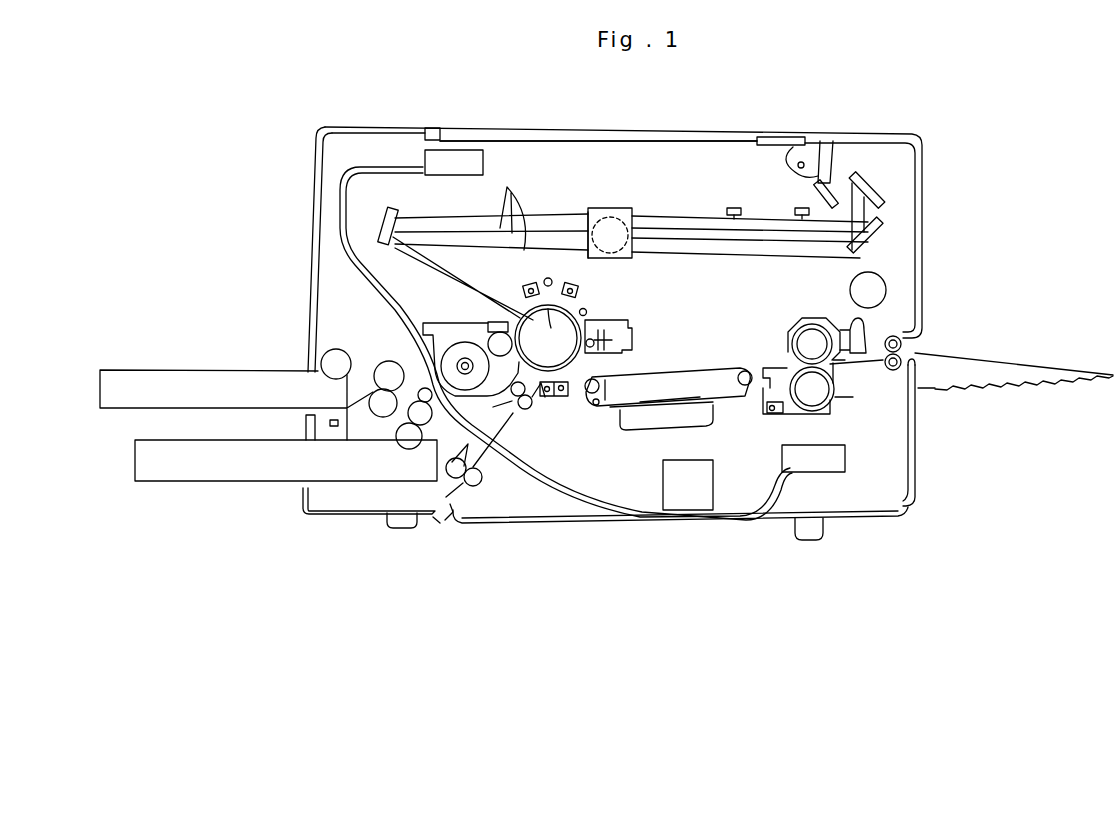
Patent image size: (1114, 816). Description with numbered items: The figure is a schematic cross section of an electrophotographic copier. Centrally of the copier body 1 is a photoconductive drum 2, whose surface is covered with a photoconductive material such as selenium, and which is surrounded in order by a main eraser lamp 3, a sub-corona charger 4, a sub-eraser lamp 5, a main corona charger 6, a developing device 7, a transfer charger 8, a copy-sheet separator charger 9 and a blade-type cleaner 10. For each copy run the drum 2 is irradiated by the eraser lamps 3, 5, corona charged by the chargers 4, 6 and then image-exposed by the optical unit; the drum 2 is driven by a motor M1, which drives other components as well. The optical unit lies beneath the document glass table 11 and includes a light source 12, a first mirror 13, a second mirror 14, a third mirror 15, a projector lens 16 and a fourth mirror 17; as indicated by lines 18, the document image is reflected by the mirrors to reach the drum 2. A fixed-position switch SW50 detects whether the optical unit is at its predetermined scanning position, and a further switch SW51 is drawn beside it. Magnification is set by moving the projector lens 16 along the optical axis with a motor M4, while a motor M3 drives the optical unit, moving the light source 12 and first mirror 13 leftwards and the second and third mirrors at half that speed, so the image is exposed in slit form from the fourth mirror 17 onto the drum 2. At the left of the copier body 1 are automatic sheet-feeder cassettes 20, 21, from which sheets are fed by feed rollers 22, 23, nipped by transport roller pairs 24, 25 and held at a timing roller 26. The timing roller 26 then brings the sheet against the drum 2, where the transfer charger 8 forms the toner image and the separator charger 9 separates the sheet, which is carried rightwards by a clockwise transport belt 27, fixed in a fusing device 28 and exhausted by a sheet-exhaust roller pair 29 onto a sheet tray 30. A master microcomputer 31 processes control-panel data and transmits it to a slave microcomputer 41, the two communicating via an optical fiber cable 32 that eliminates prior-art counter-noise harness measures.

The copier body 1 is at (926, 221).
The photoconductive drum 2 is at (548, 338).
The main eraser lamp 3 is at (590, 311).
The sub-corona charger 4 is at (574, 285).
The sub-eraser lamp 5 is at (548, 282).
The main corona charger 6 is at (524, 284).
The developing device 7 is at (440, 324).
The transfer charger 8 is at (550, 397).
The copy-sheet separator charger 9 is at (565, 397).
The blade-type cleaner 10 is at (632, 336).
The document glass table 11 is at (696, 143).
The light source 12 is at (787, 163).
The first mirror 13 is at (815, 193).
The second mirror 14 is at (872, 186).
The third mirror 15 is at (868, 236).
The projector lens 16 is at (615, 208).
The fourth mirror 17 is at (388, 212).
The lines 18 is at (507, 188).
The automatic sheet-feeder cassette 20 is at (176, 370).
The automatic sheet-feeder cassette 21 is at (128, 467).
The feed roller 22 is at (338, 350).
The feed roller 23 is at (396, 435).
The transport roller pair 24 is at (388, 361).
The transport roller pair 25 is at (432, 417).
The timing roller 26 is at (530, 407).
The transport belt 27 is at (715, 376).
The fusing device 28 is at (788, 347).
The sheet-exhaust roller pair 29 is at (891, 374).
The sheet tray 30 is at (1020, 389).
The microcomputer (master microcomputer) 31 is at (445, 160).
The optical fiber cable 32 is at (338, 187).
The microcomputer (slave microcomputer) 41 is at (828, 463).
The motor M1 is at (663, 482).
The motor M3 is at (886, 292).
The motor M4 is at (589, 212).
The fixed-position switch SW50 is at (801, 219).
The switch SW51 is at (734, 219).